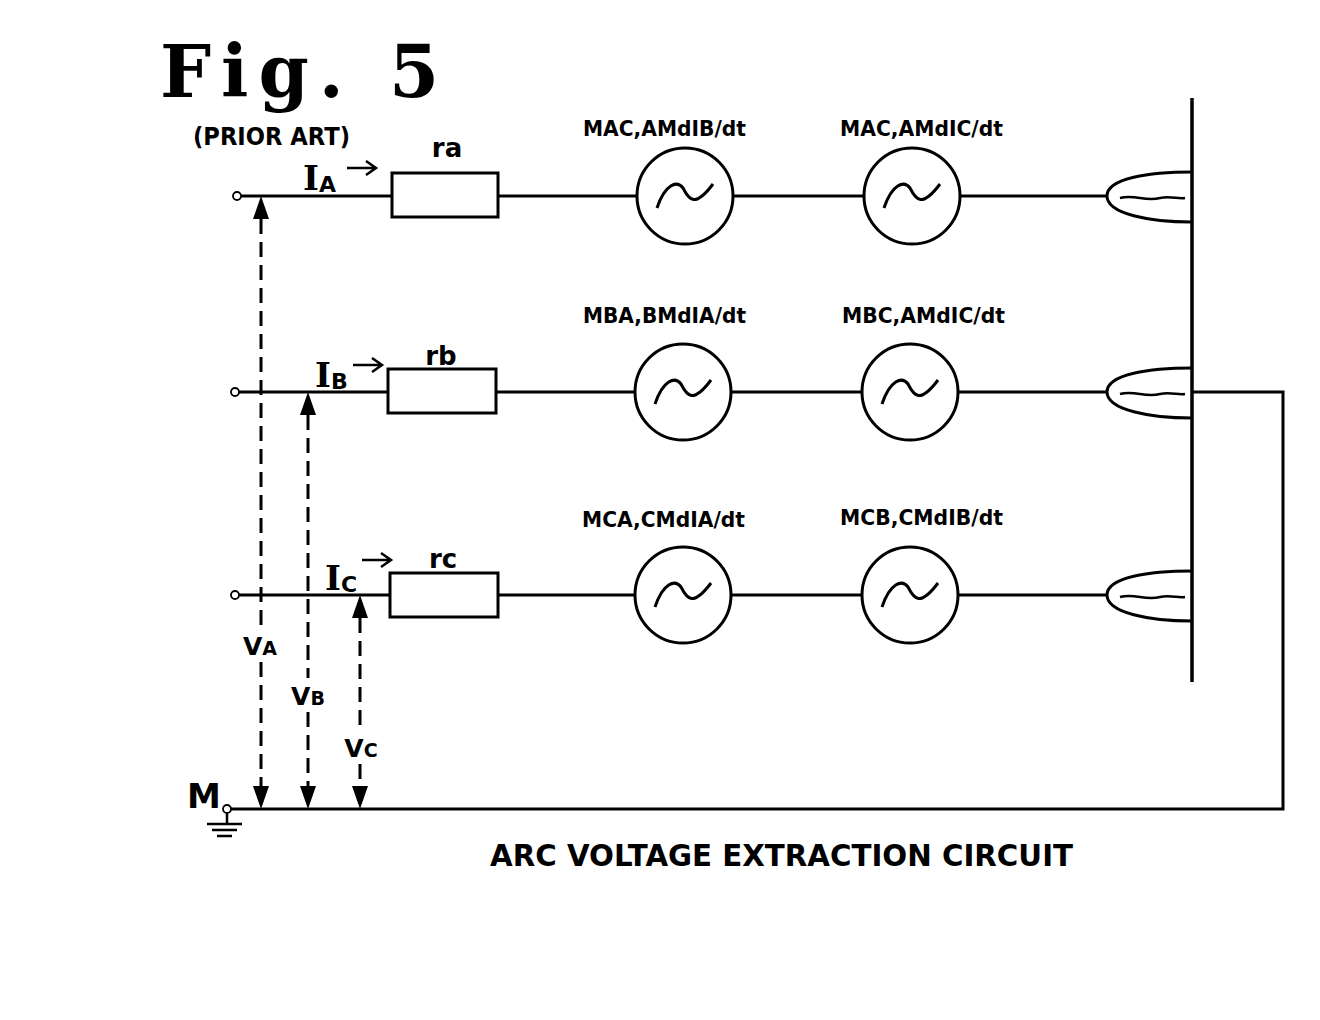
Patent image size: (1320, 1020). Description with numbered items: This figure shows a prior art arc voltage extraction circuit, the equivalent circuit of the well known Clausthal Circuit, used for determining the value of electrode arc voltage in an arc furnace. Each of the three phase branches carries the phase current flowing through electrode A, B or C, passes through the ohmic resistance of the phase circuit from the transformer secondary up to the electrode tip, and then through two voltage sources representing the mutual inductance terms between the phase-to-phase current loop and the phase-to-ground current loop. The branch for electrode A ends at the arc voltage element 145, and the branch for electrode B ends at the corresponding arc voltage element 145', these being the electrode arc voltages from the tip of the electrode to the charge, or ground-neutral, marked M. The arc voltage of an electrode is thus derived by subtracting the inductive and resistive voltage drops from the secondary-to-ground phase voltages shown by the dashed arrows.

The arc voltage detector (phase A) 145 is at (1206, 178).
The arc voltage detector (phase B) 145' is at (1202, 374).